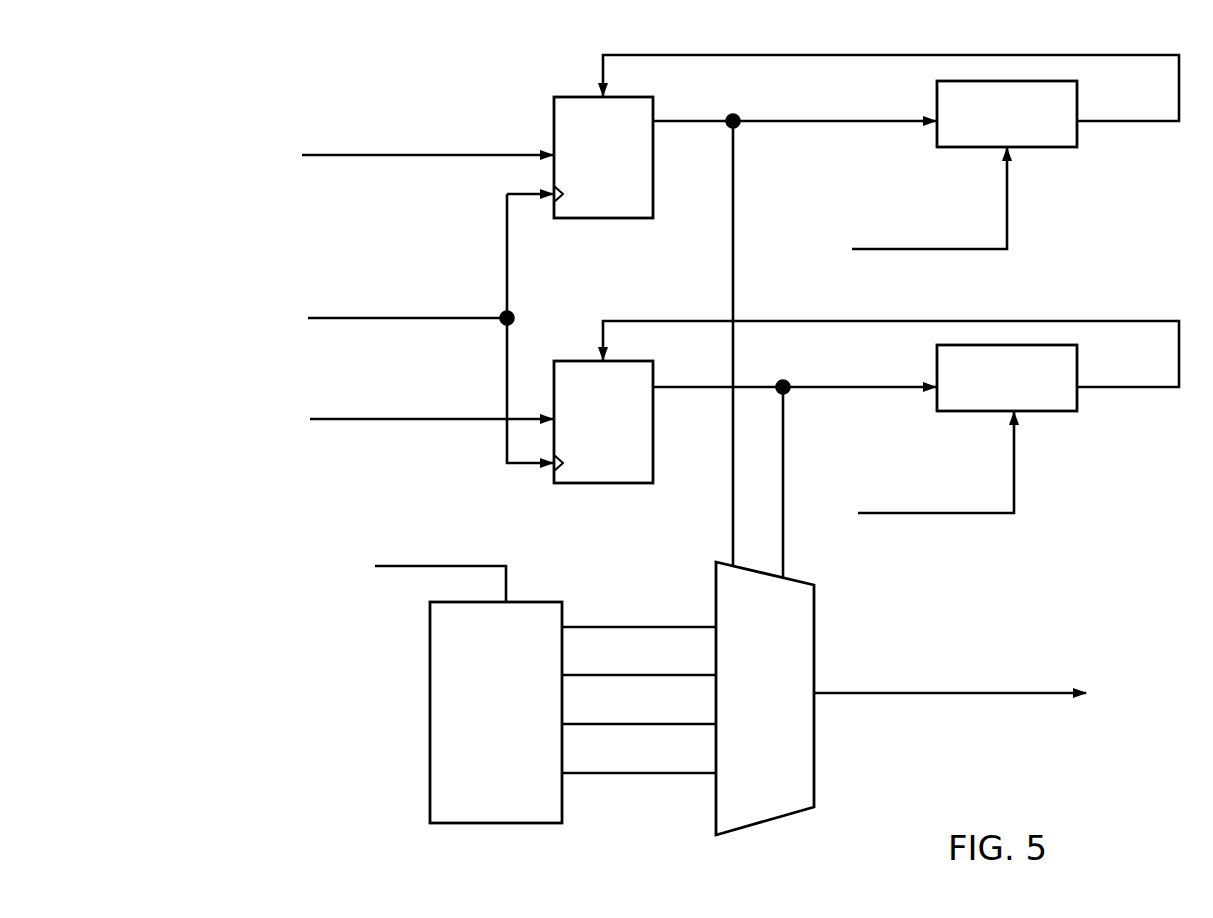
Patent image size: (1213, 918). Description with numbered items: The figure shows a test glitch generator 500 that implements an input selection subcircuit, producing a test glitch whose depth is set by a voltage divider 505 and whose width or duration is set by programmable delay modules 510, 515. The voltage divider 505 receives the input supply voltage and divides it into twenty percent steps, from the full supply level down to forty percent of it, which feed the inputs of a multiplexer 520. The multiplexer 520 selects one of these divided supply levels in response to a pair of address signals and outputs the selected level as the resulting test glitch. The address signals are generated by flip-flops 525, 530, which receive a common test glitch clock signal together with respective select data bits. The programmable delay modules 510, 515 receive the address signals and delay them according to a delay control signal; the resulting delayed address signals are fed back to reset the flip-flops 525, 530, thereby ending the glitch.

The test glitch generator 500 is at (256, 62).
The voltage divider 505 is at (496, 712).
The programmable delay module 510 is at (1007, 114).
The programmable delay module 515 is at (1007, 378).
The multiplexer 520 is at (814, 740).
The flip-flop 525 is at (653, 218).
The flip-flop 530 is at (653, 483).